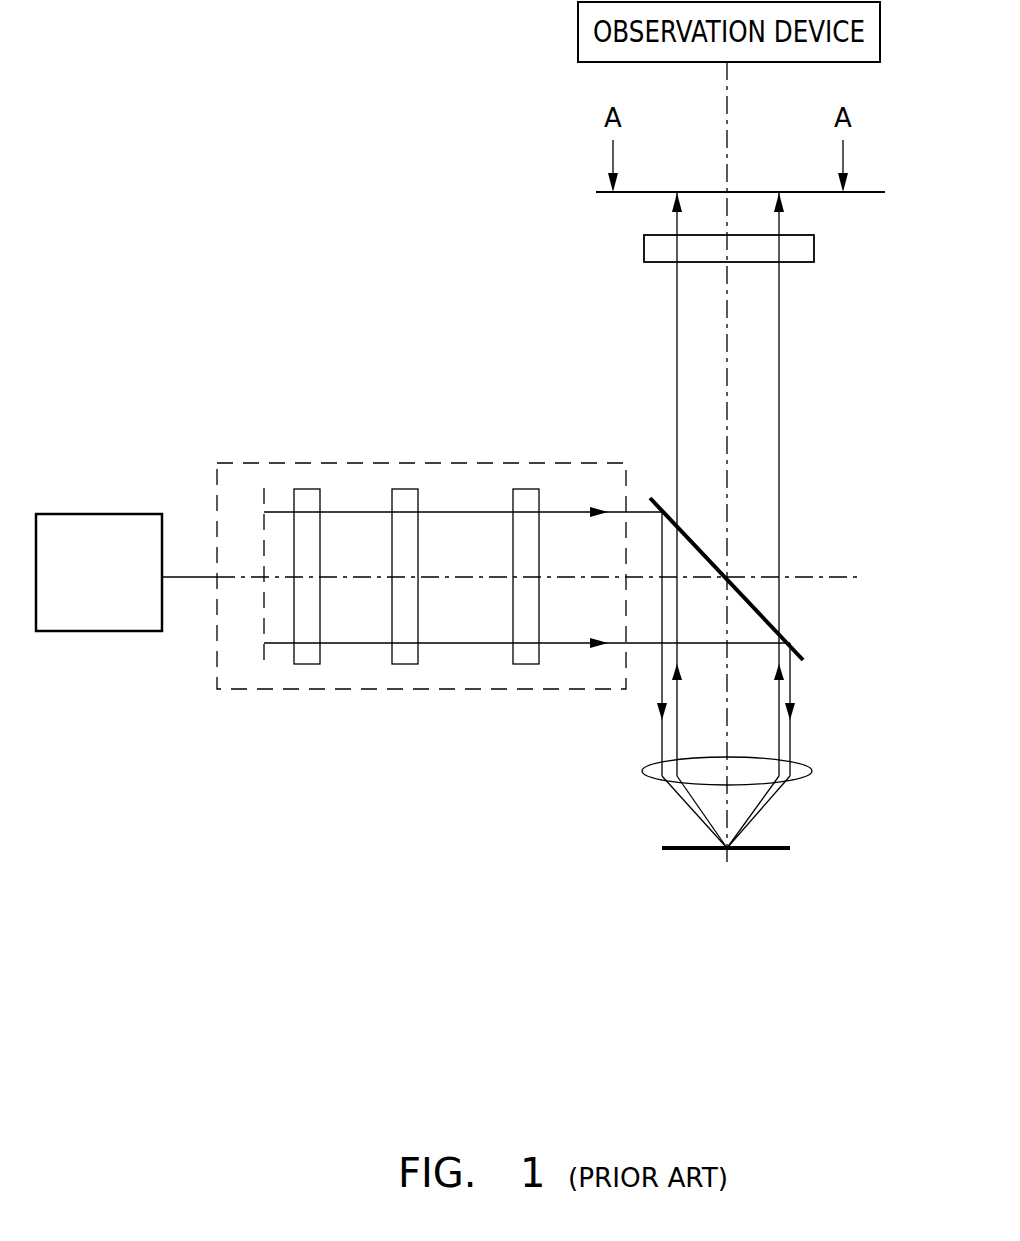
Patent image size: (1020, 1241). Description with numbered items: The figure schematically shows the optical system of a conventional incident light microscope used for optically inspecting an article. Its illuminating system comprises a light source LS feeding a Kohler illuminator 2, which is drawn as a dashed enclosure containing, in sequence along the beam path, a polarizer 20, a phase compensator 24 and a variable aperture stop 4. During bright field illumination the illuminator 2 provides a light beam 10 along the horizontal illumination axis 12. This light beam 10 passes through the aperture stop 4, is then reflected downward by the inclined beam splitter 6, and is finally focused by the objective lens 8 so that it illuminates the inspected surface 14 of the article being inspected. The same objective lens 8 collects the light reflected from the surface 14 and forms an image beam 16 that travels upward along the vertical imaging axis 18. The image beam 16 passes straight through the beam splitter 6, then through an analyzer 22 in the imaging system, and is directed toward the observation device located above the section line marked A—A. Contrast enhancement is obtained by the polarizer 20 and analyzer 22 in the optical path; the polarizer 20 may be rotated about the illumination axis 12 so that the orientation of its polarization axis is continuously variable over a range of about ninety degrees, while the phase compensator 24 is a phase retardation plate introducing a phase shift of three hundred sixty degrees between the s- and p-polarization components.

The light source LS is at (99, 548).
The Kohler illuminator 2 is at (421, 528).
The polarizer 20 is at (336, 515).
The phase compensator 24 is at (437, 515).
The variable aperture stop 4 is at (549, 515).
The beam splitter 6 is at (767, 579).
The objective lens 8 is at (763, 740).
The light beam 10 is at (529, 641).
The illumination axis 12 is at (532, 538).
The inspected surface 14 is at (757, 878).
The image beam 16 is at (782, 520).
The imaging axis 18 is at (814, 463).
The analyzer 22 is at (773, 266).